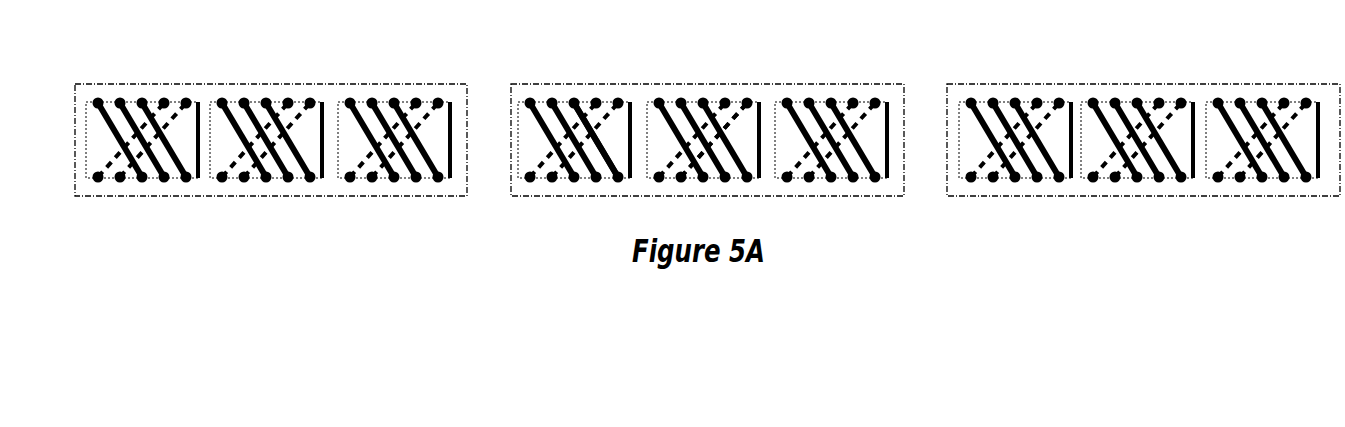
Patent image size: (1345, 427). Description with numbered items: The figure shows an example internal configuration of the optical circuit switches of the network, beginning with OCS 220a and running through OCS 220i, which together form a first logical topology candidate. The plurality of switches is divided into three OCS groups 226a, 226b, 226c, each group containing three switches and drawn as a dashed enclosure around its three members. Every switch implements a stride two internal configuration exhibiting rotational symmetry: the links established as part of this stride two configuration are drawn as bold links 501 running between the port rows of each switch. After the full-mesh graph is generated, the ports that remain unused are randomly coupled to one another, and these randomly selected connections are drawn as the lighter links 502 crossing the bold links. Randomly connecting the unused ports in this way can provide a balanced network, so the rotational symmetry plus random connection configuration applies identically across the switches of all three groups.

The OCS 220a is at (142, 103).
The OCS 220i is at (1262, 103).
The OCS group 226a is at (343, 196).
The OCS group 226b is at (780, 196).
The OCS group 226c is at (1218, 196).
The bold link 501 is at (574, 103).
The link 502 is at (746, 103).